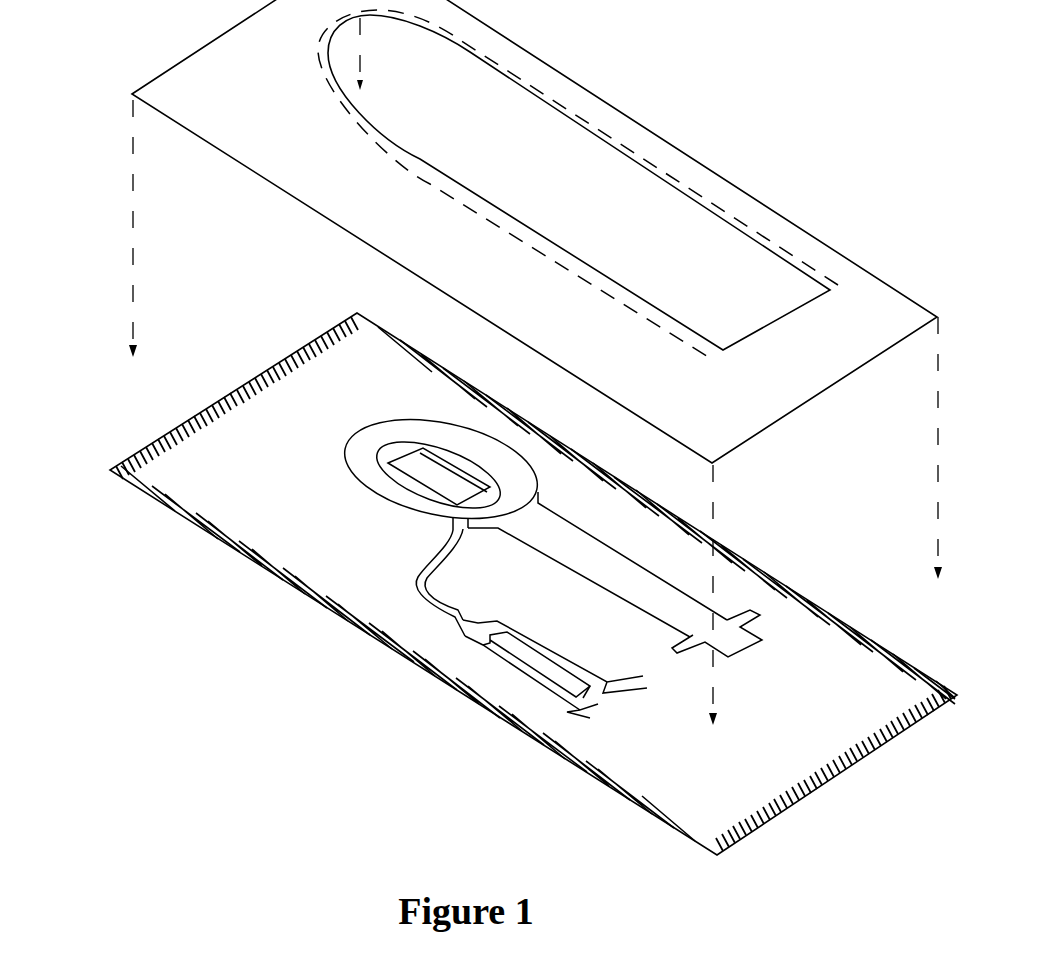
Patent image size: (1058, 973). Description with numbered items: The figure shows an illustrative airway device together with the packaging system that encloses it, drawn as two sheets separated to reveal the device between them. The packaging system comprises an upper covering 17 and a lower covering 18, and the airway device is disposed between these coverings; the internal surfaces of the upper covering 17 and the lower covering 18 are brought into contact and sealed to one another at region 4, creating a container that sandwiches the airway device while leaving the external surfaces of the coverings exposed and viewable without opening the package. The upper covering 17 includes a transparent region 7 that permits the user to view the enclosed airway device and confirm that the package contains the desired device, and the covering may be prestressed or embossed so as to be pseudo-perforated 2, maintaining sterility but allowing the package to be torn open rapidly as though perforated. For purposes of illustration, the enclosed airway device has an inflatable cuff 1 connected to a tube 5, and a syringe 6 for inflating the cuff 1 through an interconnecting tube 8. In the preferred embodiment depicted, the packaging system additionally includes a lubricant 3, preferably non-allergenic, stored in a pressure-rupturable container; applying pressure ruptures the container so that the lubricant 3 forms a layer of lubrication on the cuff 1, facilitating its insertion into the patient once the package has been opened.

The upper covering 17 is at (250, 85).
The pseudo-perforated region 2 is at (617, 138).
The transparent region 7 is at (720, 217).
The region 4 is at (140, 465).
The lower covering 18 is at (313, 475).
The inflatable cuff 1 is at (560, 572).
The lubricant 3 is at (490, 483).
The interconnecting tube 8 is at (413, 582).
The tube 5 is at (743, 632).
The syringe 6 is at (530, 677).